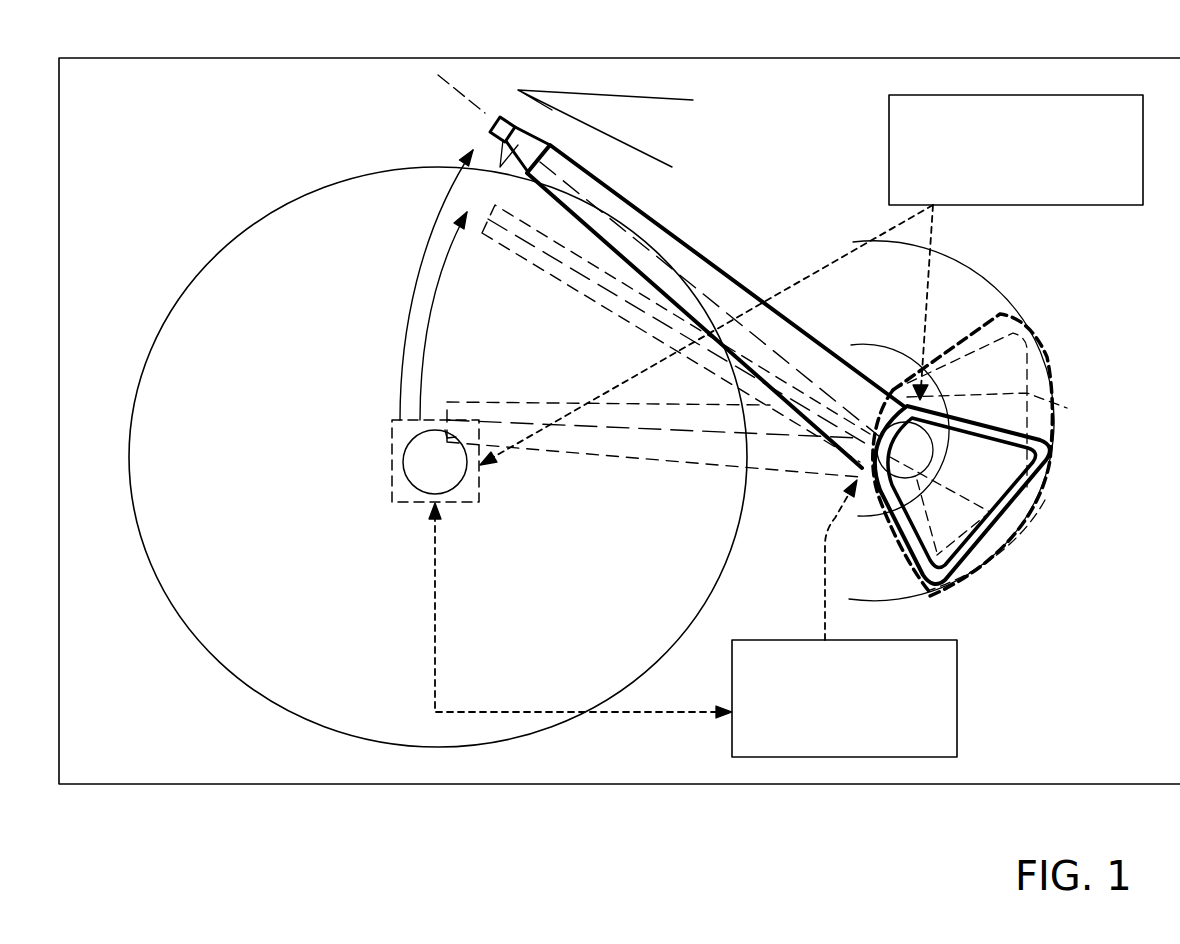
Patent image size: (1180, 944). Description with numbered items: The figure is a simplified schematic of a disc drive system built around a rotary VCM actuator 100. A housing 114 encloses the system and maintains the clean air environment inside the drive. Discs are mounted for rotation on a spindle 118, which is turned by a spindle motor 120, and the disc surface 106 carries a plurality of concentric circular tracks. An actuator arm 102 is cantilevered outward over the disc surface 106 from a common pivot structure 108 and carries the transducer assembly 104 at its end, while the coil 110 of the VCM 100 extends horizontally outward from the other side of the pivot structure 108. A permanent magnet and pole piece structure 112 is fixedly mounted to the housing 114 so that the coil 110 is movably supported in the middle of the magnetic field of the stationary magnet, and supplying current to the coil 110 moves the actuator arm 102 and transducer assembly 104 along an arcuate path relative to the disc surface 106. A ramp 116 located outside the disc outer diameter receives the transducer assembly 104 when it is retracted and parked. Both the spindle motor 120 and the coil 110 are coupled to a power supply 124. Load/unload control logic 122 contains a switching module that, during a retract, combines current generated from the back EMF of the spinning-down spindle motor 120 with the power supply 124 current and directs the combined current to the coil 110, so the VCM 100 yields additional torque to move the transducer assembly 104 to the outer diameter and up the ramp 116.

The rotary VCM actuator 100 is at (1061, 671).
The actuator arm 102 is at (713, 267).
The transducer assembly 104 is at (500, 117).
The disc surface 106 is at (203, 313).
The pivot structure 108 is at (863, 478).
The coil 110 is at (1057, 433).
The permanent magnet and pole piece structure 112 is at (1003, 312).
The housing 114 is at (893, 793).
The ramp 116 is at (543, 130).
The spindle 118 is at (402, 468).
The spindle motor 120 is at (398, 503).
The load/unload control logic 122 is at (863, 739).
The power supply 124 is at (1035, 176).